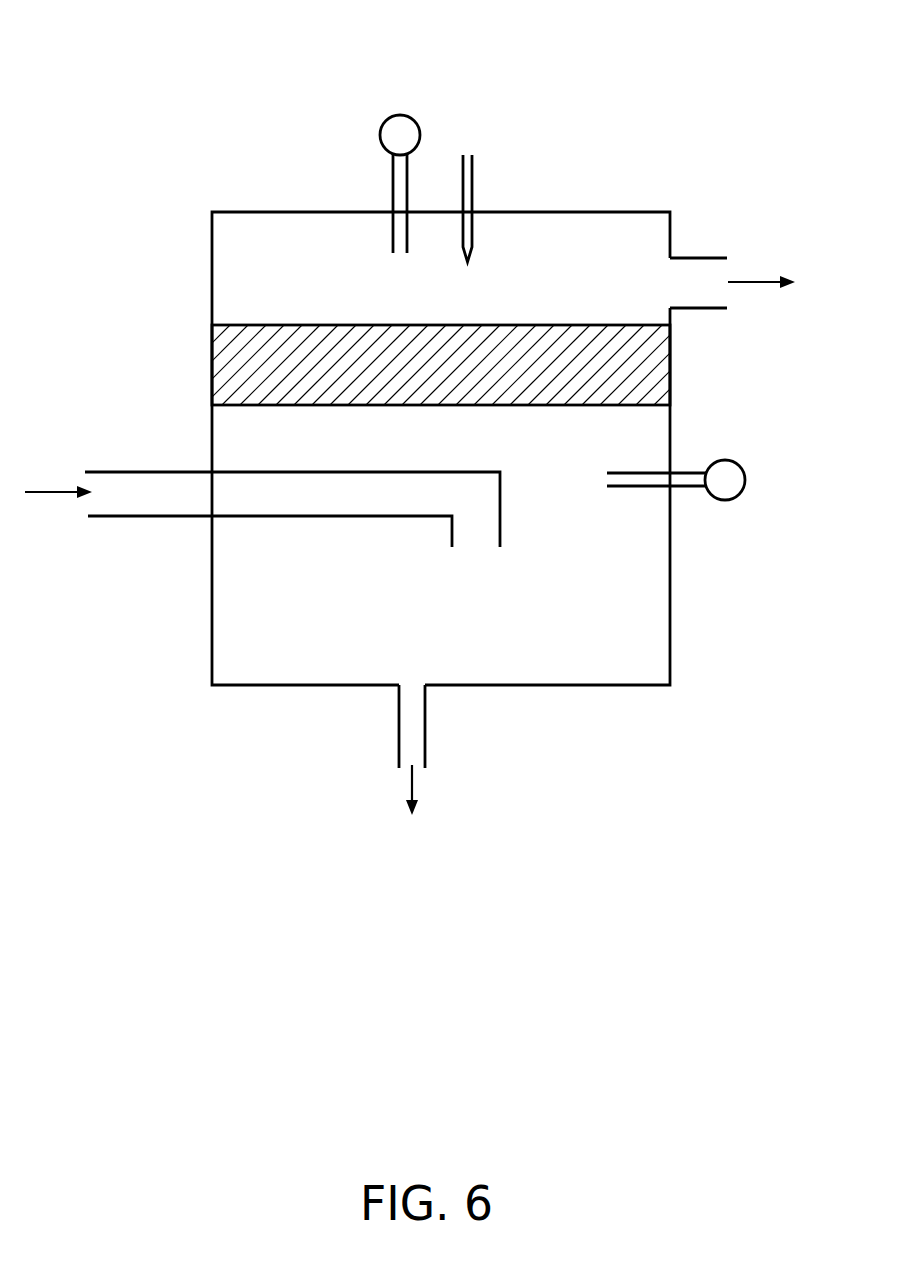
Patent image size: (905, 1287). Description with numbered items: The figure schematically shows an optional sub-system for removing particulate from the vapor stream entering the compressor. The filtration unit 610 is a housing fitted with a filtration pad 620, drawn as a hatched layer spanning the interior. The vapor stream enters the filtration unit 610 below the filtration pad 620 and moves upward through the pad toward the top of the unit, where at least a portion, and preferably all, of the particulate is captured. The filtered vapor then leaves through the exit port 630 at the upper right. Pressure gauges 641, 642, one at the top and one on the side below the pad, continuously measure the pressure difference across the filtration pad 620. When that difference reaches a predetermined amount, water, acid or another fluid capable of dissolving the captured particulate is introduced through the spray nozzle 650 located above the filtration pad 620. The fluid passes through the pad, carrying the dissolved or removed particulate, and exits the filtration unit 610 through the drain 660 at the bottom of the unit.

The filtration unit 610 is at (216, 76).
The filtration pad 620 is at (640, 378).
The exit port 630 is at (703, 277).
The pressure gauge 641 is at (400, 117).
The pressure gauge 642 is at (745, 480).
The spray nozzle 650 is at (470, 185).
The drain 660 is at (415, 742).